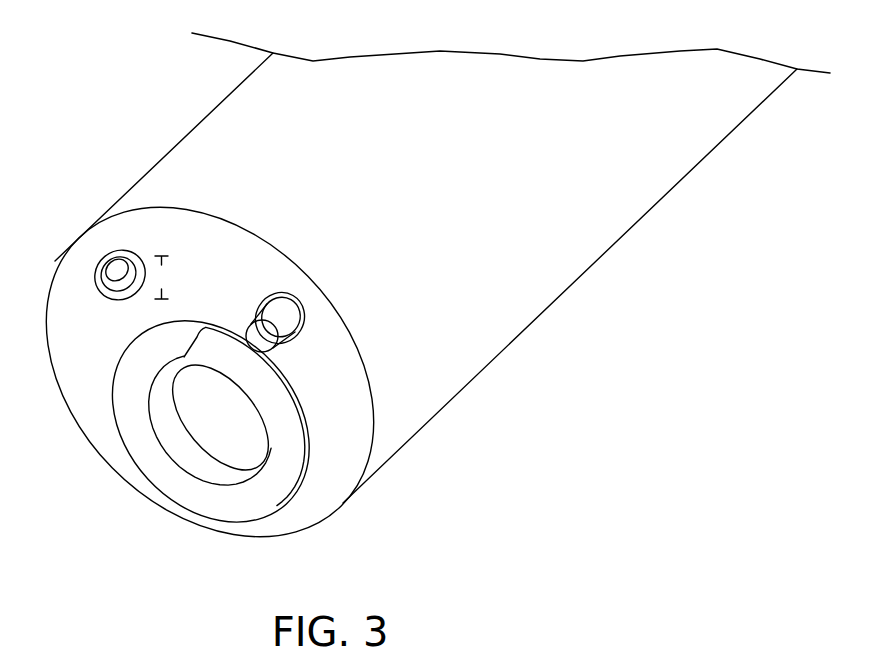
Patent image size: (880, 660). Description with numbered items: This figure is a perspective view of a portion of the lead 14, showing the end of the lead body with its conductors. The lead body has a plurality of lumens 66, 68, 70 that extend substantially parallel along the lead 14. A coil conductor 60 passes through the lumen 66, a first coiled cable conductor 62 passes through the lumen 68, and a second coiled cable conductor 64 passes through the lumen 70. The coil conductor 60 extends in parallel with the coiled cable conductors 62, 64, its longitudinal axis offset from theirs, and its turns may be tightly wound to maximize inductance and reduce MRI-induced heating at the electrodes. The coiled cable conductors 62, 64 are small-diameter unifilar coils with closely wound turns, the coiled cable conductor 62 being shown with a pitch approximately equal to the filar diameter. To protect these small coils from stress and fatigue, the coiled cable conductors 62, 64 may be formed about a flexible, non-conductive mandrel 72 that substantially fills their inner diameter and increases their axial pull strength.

The lead 14 is at (137, 131).
The coil conductor 60 is at (190, 490).
The coiled cable conductor 62 is at (92, 278).
The coiled cable conductor 64 is at (294, 305).
The lumen 66 is at (102, 410).
The lumen 68 is at (110, 226).
The lumen 70 is at (292, 283).
The mandrel 72 is at (339, 488).